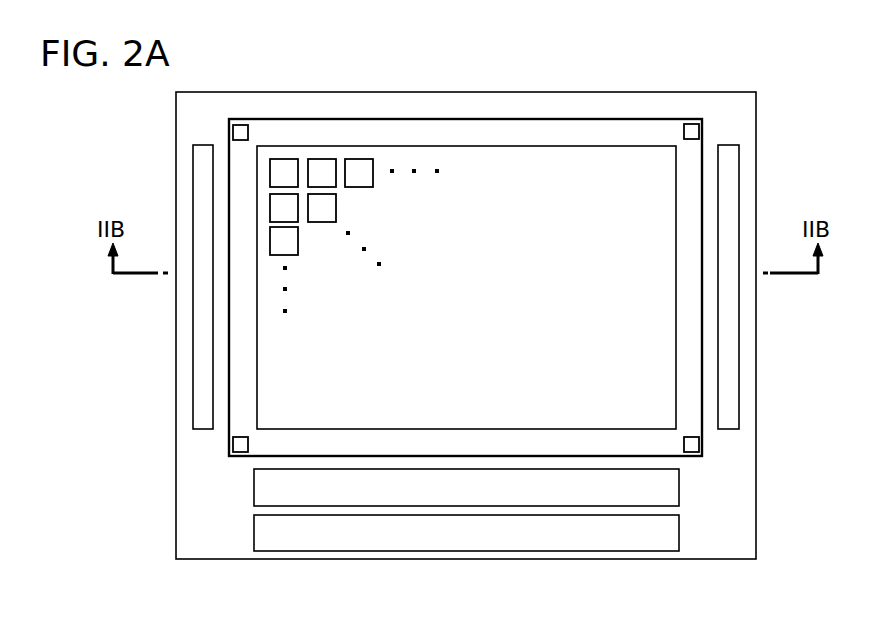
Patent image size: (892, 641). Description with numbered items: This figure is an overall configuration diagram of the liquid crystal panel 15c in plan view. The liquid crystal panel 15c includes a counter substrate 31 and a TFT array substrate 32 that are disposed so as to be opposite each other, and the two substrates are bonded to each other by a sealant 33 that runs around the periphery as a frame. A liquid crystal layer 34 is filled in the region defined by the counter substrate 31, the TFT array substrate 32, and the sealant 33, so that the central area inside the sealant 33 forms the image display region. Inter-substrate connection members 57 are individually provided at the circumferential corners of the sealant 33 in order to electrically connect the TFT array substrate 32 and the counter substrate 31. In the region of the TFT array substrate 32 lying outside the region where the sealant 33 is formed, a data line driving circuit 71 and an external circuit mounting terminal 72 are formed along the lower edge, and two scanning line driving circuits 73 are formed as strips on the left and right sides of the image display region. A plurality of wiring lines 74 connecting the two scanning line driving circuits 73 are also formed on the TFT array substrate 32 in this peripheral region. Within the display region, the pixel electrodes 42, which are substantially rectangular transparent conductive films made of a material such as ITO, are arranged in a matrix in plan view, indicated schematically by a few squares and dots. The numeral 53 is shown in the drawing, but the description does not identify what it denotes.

The liquid crystal panel 15c is at (773, 106).
The counter substrate 31 is at (465, 108).
The TFT array substrate 32 is at (370, 108).
The sealant 33 is at (697, 178).
The liquid crystal layer 34 is at (600, 173).
The pixel electrodes 42 is at (318, 160).
The terminal region 53 is at (541, 443).
The inter-substrate connection members 57 is at (233, 122).
The data line driving circuit 71 is at (422, 493).
The external circuit mounting terminal 72 is at (357, 542).
The scanning line driving circuits 73 is at (198, 172).
The wiring lines 74 is at (543, 110).